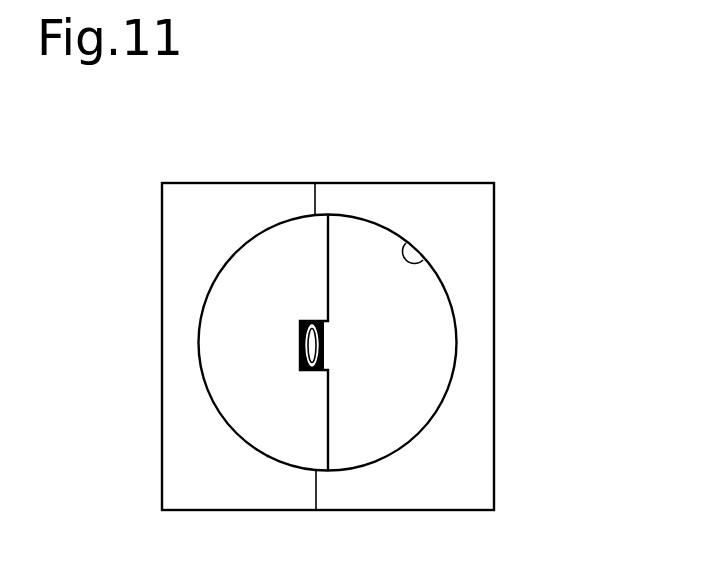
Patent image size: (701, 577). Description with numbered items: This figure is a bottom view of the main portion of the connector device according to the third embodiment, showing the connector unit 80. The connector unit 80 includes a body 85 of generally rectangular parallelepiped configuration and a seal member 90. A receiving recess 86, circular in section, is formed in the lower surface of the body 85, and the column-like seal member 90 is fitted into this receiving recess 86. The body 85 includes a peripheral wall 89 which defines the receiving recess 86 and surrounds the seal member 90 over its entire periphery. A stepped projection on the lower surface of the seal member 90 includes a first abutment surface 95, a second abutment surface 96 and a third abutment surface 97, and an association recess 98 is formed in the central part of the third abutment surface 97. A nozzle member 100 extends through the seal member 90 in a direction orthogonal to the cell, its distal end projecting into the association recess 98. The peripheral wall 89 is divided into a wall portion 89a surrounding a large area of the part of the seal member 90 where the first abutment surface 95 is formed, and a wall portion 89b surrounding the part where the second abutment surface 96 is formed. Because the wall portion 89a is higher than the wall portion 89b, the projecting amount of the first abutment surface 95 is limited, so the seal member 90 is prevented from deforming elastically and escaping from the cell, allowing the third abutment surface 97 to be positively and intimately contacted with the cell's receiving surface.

The connector unit 80 is at (534, 146).
The body 85 is at (414, 183).
The receiving recess 86 is at (422, 264).
The peripheral wall 89 is at (258, 198).
The wall portion 89a is at (185, 262).
The wall portion 89b is at (467, 408).
The seal member 90 is at (472, 315).
The first abutment surface 95 is at (228, 352).
The second abutment surface 96 is at (428, 363).
The third abutment surface 97 is at (328, 424).
The association recess 98 is at (323, 343).
The nozzle member 100 is at (322, 341).